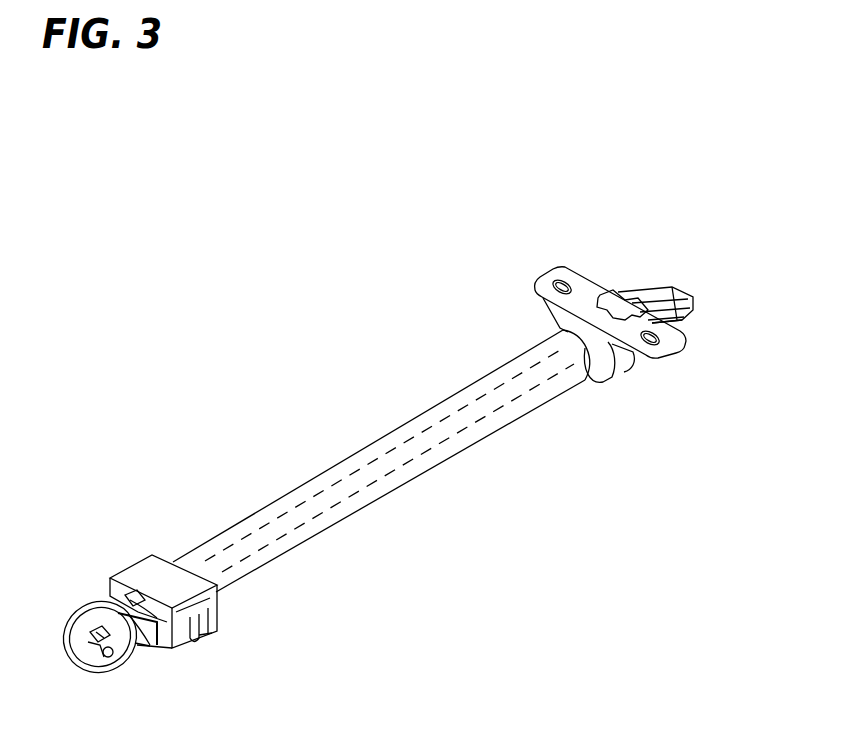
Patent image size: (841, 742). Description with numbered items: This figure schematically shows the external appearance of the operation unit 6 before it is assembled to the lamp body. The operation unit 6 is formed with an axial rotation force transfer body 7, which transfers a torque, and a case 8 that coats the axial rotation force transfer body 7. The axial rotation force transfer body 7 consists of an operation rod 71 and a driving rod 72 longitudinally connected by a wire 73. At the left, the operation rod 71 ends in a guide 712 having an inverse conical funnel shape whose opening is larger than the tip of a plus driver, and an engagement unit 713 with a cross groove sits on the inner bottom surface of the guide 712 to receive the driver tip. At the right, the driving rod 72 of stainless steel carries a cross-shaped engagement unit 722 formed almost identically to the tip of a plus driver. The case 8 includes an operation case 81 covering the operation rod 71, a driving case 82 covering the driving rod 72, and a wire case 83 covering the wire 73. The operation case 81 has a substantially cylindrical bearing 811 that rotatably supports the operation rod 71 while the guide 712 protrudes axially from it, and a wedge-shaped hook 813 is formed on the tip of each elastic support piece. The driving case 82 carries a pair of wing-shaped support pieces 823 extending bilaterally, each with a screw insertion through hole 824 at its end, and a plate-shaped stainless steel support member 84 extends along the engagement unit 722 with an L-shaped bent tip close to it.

The operation unit 6 is at (310, 377).
The axial rotation force transfer body 7 is at (413, 428).
The case 8 is at (291, 494).
The operation rod 71 is at (143, 655).
The guide 712 is at (67, 612).
The engagement unit 713 is at (100, 662).
The driving rod 72 is at (618, 293).
The engagement unit 722 is at (657, 292).
The wire 73 is at (457, 440).
The operation case 81 is at (144, 563).
The bearing 811 is at (192, 607).
The hook 813 is at (203, 641).
The driving case 82 is at (615, 385).
The support pieces 823 is at (587, 293).
The screw insertion through holes 824 is at (536, 300).
The wire case 83 is at (362, 508).
The support member 84 is at (693, 318).